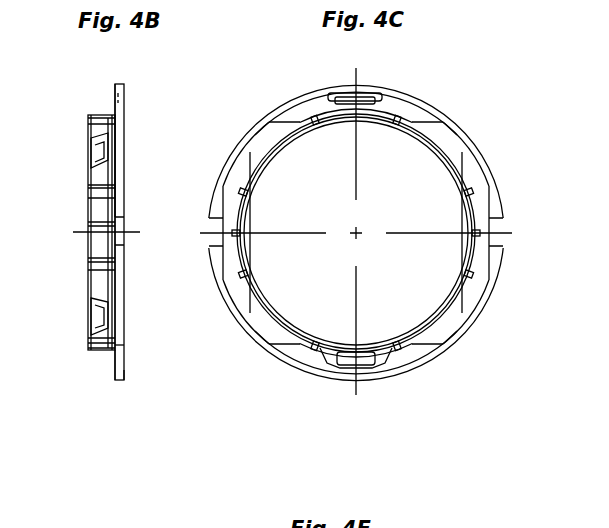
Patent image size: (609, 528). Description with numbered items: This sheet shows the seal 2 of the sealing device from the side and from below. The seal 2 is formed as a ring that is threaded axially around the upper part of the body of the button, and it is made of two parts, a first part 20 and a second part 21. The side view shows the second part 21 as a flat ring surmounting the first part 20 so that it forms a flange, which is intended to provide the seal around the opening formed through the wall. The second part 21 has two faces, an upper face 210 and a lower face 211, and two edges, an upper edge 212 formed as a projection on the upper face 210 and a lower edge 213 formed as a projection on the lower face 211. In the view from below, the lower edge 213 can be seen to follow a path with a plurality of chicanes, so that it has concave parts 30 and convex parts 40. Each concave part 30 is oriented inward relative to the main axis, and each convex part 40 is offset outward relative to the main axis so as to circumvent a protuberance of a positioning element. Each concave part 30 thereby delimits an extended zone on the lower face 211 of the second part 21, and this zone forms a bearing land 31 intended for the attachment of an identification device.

In FIG. 4B, the seal 2 is at (116, 84).
In FIG. 4C, the seal 2 is at (422, 100).
In FIG. 4B, the first part 20 is at (97, 128).
In FIG. 4B, the second part 21 is at (122, 100).
In FIG. 4B, the upper face 210 is at (123, 348).
In FIG. 4B, the lower face 211 is at (110, 360).
In FIG. 4C, the lower face 211 is at (322, 363).
In FIG. 4B, the upper edge 212 is at (62, 393).
In FIG. 4C, the lower edge 213 is at (305, 352).
In FIG. 4C, the concave part 30 is at (400, 358).
In FIG. 4C, the bearing land 31 is at (420, 360).
In FIG. 4C, the convex part 40 is at (467, 308).